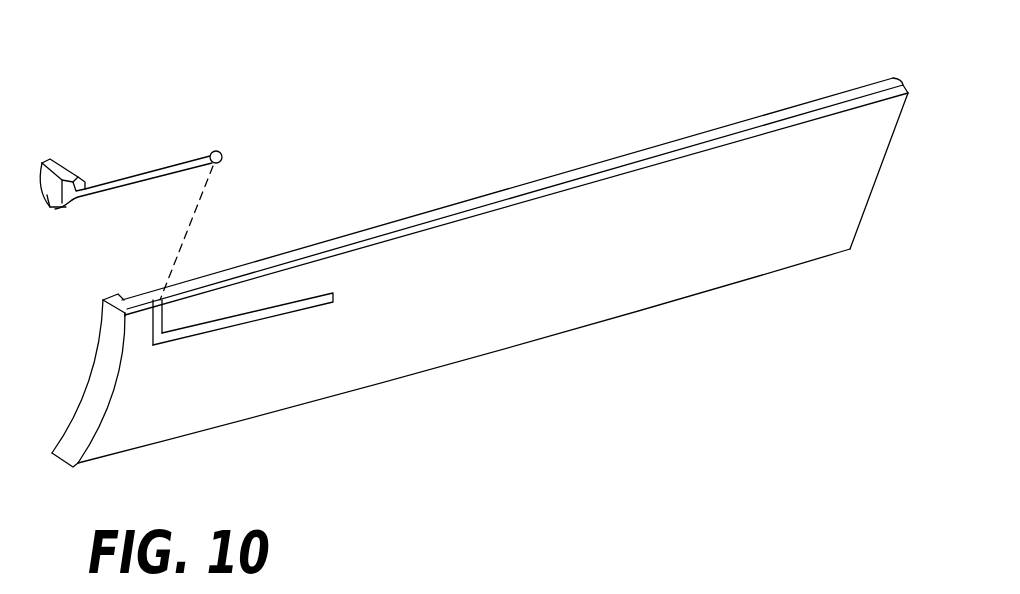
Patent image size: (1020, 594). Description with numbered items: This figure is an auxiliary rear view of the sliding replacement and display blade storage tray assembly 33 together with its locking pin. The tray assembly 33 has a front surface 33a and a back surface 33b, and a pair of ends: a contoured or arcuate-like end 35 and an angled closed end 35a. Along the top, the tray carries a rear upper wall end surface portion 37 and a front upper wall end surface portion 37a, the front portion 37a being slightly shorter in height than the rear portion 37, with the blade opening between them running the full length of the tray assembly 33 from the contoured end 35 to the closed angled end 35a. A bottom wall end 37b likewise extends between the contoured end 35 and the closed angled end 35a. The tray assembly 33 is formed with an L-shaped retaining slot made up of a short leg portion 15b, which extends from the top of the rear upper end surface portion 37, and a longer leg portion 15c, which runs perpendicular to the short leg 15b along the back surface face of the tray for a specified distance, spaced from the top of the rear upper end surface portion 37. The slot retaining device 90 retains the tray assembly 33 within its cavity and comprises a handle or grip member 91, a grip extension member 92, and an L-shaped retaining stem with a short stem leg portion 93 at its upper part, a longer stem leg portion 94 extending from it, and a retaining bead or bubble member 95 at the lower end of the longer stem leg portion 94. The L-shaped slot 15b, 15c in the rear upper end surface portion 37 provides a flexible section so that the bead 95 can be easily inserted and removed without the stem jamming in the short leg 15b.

The sliding replacement and display blade storage tray assembly 33 is at (791, 102).
The front surface 33a is at (207, 308).
The back surface 33b is at (567, 287).
The contoured or arcuate-like end 35 is at (88, 377).
The angled closed end 35a is at (877, 183).
The rear upper wall end surface portion 37 is at (618, 173).
The front upper wall end surface portion 37a is at (510, 190).
The bottom wall end 37b is at (490, 356).
The short leg portion 15b is at (158, 299).
The longer leg portion 15c is at (233, 320).
The slot retaining device 90 is at (209, 119).
The handle or grip member 91 is at (68, 172).
The grip extension member 92 is at (86, 180).
The short stem leg portion 93 is at (62, 200).
The longer stem leg portion 94 is at (137, 184).
The retaining bead or bubble member 95 is at (223, 157).